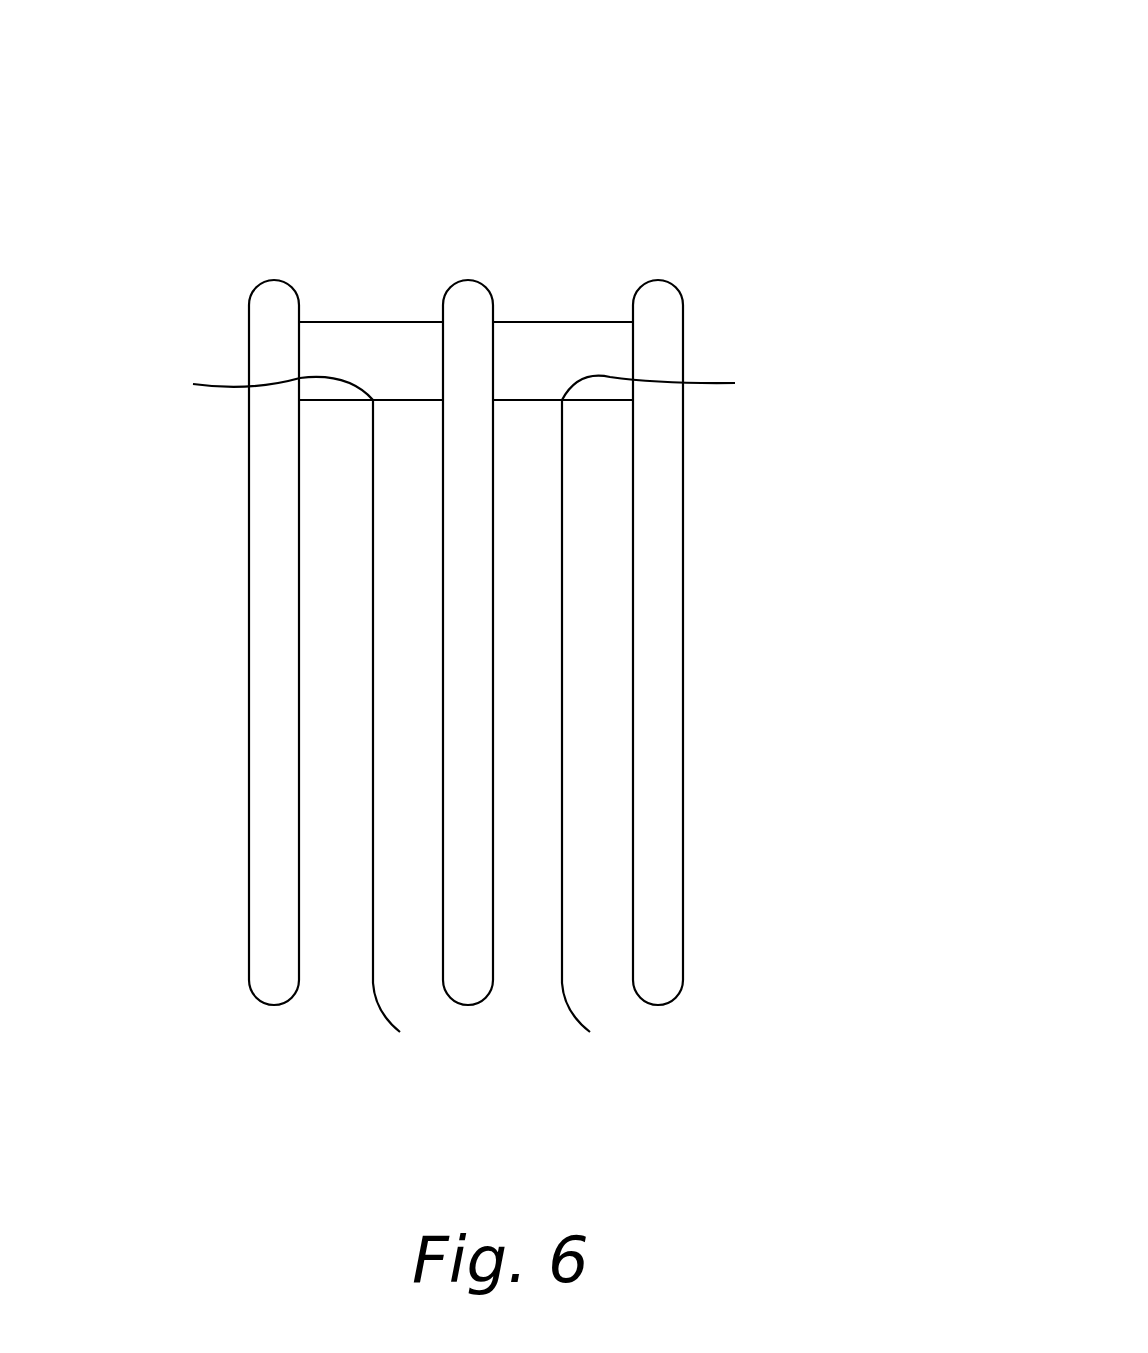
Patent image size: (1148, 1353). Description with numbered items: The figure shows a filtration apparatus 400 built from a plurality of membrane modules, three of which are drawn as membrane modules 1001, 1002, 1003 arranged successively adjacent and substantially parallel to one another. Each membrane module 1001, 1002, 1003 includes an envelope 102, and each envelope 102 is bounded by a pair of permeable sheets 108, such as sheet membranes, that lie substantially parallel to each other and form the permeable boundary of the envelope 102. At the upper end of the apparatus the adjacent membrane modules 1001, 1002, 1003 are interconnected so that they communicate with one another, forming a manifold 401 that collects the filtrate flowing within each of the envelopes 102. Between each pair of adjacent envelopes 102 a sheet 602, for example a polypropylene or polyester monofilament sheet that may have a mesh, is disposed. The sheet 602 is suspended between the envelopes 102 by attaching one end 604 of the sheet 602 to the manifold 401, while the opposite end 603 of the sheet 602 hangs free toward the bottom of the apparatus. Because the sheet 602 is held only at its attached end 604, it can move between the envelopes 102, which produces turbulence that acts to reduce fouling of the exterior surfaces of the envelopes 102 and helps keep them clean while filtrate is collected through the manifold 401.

The filtration apparatus 400 is at (751, 88).
The membrane module 1001 is at (234, 244).
The membrane module 1002 is at (501, 247).
The membrane module 1003 is at (694, 244).
The manifold 401 is at (411, 321).
The end of sheet 604 is at (462, 374).
The sheet 602 is at (373, 650).
The end of sheet 603 is at (508, 1020).
The permeable sheet 108 is at (633, 550).
The envelope 102 is at (292, 1021).